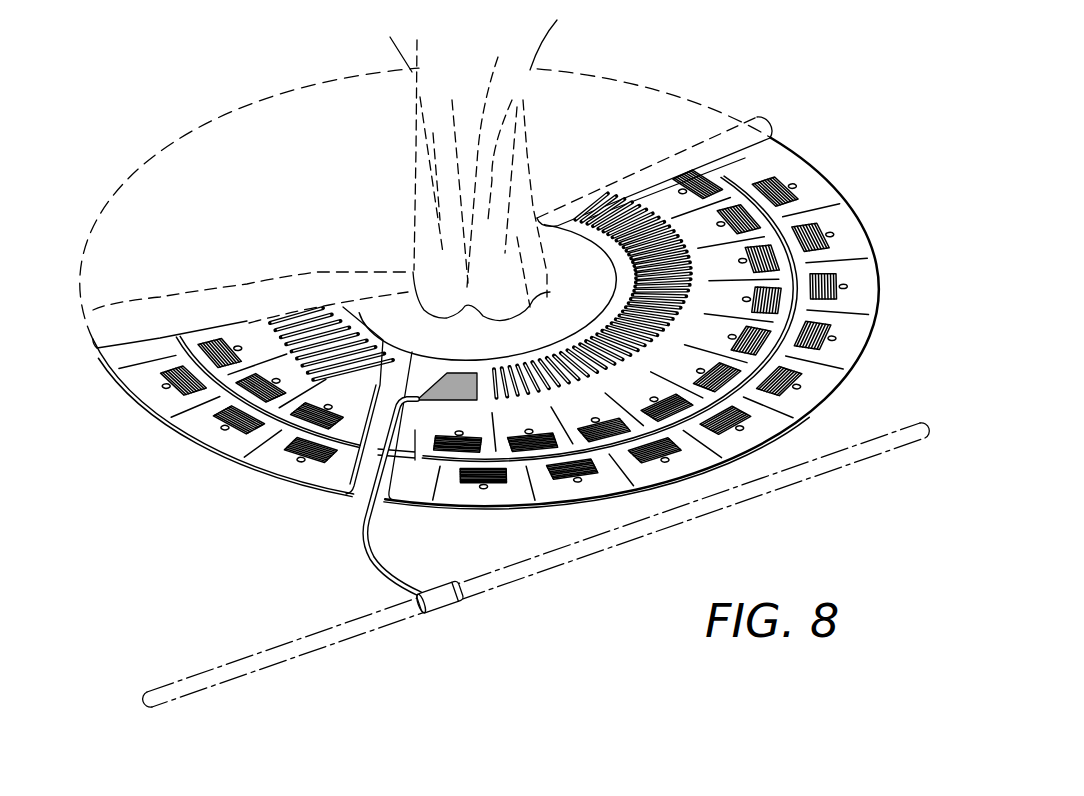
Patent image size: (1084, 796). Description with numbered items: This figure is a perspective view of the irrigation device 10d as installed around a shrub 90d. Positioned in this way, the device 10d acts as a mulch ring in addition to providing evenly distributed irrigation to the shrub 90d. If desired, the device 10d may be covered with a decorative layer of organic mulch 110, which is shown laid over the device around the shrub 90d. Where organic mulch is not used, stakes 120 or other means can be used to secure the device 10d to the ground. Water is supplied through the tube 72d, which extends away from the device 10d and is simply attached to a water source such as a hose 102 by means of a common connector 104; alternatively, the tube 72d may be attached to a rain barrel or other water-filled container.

The shrub 90d is at (523, 62).
The decorative layer of organic mulch 110 is at (651, 96).
The device 10d is at (778, 156).
The stakes 120 is at (148, 414).
The tube 72d is at (370, 555).
The connector 104 is at (455, 604).
The hose 102 is at (340, 644).